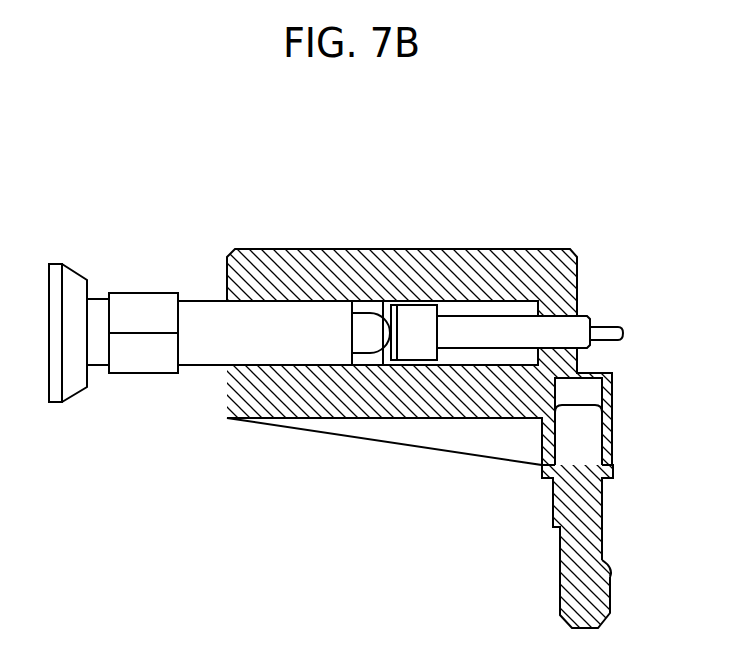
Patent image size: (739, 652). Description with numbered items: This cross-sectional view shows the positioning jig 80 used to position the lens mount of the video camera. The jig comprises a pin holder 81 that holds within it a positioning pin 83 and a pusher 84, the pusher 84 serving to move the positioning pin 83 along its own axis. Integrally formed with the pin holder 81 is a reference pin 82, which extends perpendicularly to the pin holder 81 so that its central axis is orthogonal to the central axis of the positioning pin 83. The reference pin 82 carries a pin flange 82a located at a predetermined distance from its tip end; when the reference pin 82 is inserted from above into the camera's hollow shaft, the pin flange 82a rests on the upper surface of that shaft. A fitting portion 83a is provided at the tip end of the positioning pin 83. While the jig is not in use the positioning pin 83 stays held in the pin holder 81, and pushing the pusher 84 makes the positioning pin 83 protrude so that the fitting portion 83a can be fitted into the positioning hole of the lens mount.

The positioning jig 80 is at (207, 184).
The pin holder 81 is at (347, 266).
The reference pin 82 is at (575, 584).
The pin flange 82a is at (610, 568).
The positioning pin 83 is at (505, 328).
The fitting portion 83a is at (612, 328).
The pusher 84 is at (148, 355).